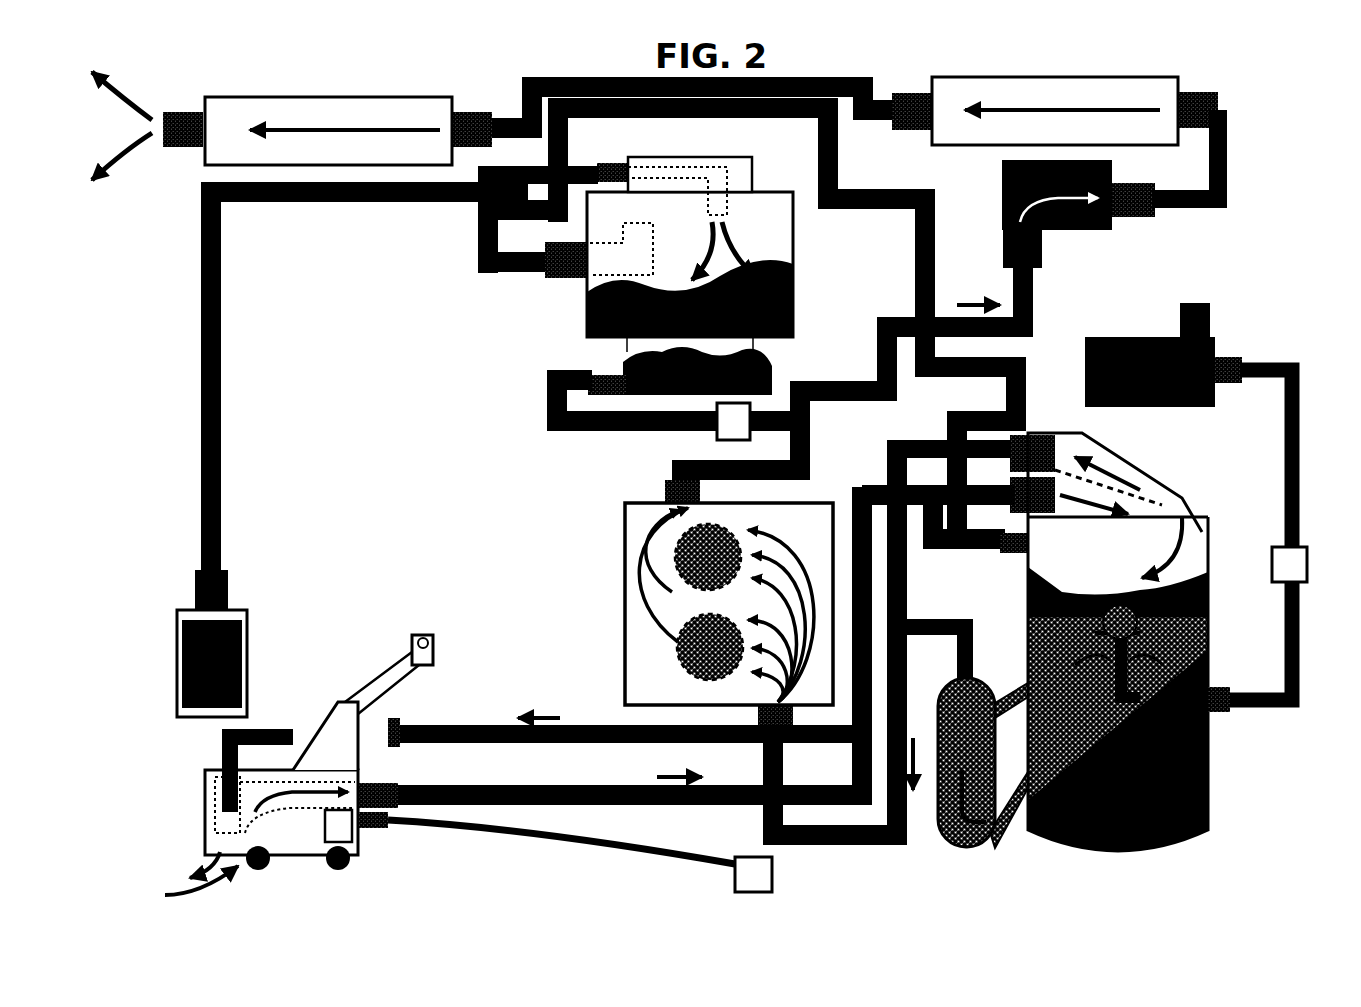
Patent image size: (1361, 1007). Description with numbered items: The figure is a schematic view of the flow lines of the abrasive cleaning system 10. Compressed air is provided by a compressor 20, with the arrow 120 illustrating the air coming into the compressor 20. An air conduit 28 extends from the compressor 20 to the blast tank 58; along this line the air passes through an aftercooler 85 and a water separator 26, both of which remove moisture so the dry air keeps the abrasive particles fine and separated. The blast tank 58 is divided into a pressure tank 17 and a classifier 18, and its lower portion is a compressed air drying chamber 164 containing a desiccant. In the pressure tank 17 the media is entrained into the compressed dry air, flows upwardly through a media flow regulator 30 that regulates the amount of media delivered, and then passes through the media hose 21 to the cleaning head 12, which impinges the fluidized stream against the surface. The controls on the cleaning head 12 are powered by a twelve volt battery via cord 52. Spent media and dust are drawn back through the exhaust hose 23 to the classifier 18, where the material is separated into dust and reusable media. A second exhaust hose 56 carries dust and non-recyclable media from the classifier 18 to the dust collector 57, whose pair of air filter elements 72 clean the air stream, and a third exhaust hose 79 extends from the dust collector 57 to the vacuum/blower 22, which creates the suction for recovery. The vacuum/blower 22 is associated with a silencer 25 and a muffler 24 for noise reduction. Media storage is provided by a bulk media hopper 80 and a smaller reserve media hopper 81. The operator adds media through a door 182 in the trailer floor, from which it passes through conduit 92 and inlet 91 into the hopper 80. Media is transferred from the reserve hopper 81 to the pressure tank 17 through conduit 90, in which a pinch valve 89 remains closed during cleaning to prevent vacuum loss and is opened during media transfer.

The system 10 is at (1194, 61).
The cleaning head 12 is at (336, 709).
The pressure tank 17 is at (1127, 642).
The classifier 18 is at (1197, 548).
The compressor 20 is at (1122, 337).
The media hose 21 is at (475, 725).
The vacuum/blower 22 is at (1072, 232).
The exhaust hose 23 is at (853, 489).
The muffler 24 is at (377, 100).
The silencer 25 is at (1032, 82).
The water separator 26 is at (1223, 712).
The air conduit 28 is at (1299, 461).
The media flow regulator 30 is at (955, 843).
The cord 52 is at (580, 840).
The second exhaust hose 56 is at (870, 846).
The dust collector 57 is at (706, 604).
The blast tank 58 is at (1045, 652).
The air filter elements 72 is at (692, 574).
The third exhaust hose 79 is at (877, 345).
The bulk media hopper 80 is at (786, 249).
The reserve media hopper 81 is at (753, 352).
The aftercooler 85 is at (1312, 538).
The pinch valve 89 is at (717, 438).
The conduit 90 is at (590, 431).
The inlet 91 is at (626, 258).
The conduit 92 is at (478, 258).
The arrow 120 is at (1200, 288).
The compressed air drying chamber 164 is at (1208, 777).
The door 182 is at (248, 653).